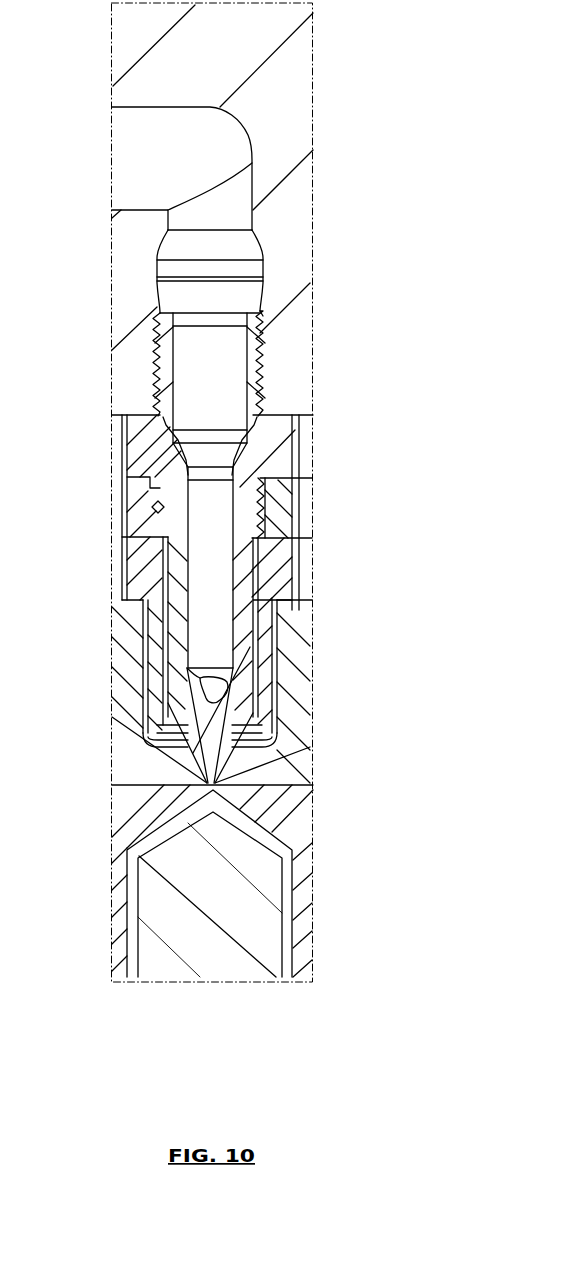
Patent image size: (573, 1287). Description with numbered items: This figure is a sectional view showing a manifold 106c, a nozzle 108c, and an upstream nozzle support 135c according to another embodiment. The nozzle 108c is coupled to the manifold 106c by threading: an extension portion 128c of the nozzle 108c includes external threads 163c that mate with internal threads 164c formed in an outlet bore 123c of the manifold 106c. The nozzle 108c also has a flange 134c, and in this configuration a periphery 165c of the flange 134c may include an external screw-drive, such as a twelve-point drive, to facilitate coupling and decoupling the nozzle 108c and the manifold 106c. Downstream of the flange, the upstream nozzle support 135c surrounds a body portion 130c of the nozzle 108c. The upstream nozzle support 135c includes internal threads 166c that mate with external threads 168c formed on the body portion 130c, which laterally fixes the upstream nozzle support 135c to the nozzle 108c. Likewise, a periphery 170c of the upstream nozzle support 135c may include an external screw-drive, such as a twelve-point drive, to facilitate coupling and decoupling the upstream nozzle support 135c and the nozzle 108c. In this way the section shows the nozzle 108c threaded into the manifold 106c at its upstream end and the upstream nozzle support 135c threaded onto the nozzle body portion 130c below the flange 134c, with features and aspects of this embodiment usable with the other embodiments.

The manifold 106c is at (298, 92).
The outlet bore 123c is at (257, 292).
The extension portion 128c is at (260, 333).
The external threads 163c is at (260, 348).
The internal threads 164c is at (262, 363).
The periphery of flange 165c is at (297, 432).
The flange 134c is at (265, 447).
The nozzle 108c is at (269, 480).
The upstream nozzle support 135c is at (270, 512).
The external threads 168c is at (158, 490).
The periphery of upstream nozzle support 170c is at (126, 501).
The internal threads 166c is at (172, 520).
The body portion 130c is at (168, 510).